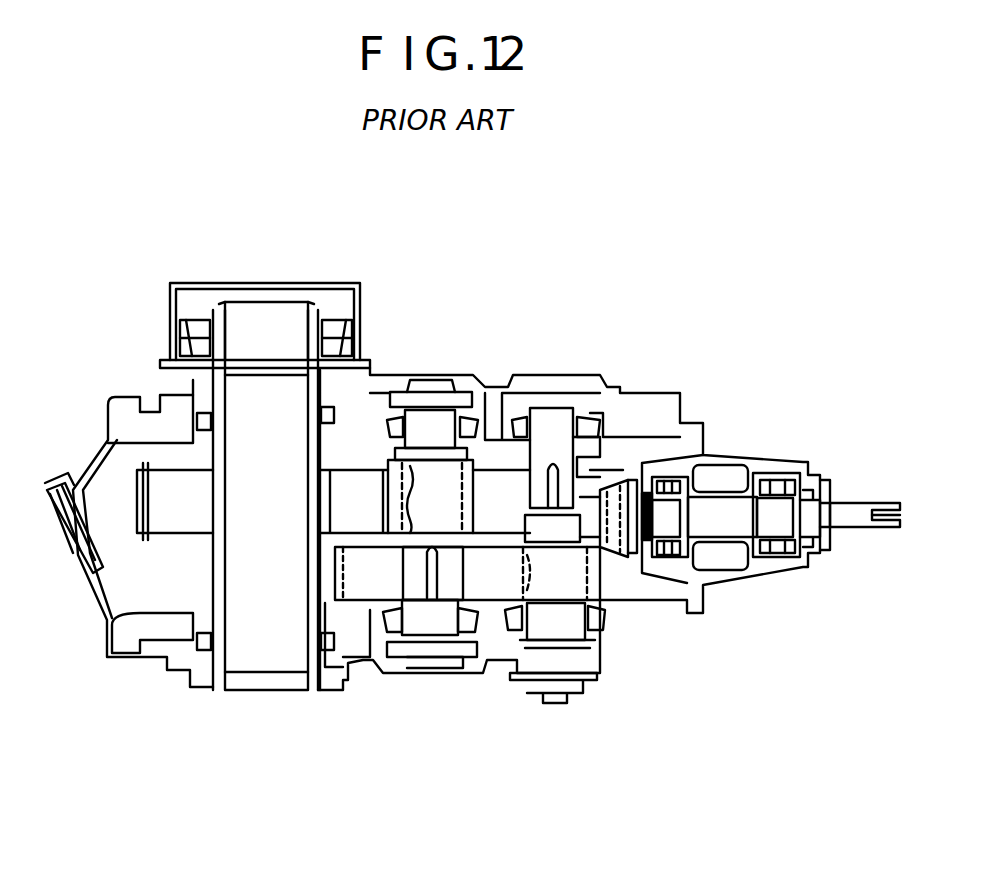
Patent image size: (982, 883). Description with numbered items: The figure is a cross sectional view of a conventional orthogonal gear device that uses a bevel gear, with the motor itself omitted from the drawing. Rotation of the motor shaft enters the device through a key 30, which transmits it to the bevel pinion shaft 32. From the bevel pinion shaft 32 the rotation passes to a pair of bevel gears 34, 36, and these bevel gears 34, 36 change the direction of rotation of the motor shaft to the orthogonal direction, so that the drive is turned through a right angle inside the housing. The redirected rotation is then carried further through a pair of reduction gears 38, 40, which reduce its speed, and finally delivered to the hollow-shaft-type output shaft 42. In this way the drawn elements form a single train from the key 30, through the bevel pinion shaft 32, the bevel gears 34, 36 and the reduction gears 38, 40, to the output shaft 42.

The key 30 is at (866, 531).
The bevel pinion shaft 32 is at (722, 502).
The bevel gear 34 is at (623, 470).
The bevel gear 36 is at (600, 470).
The reduction gear 38 is at (497, 583).
The reduction gear 40 is at (358, 520).
The hollow-shaft-type output shaft 42 is at (213, 312).